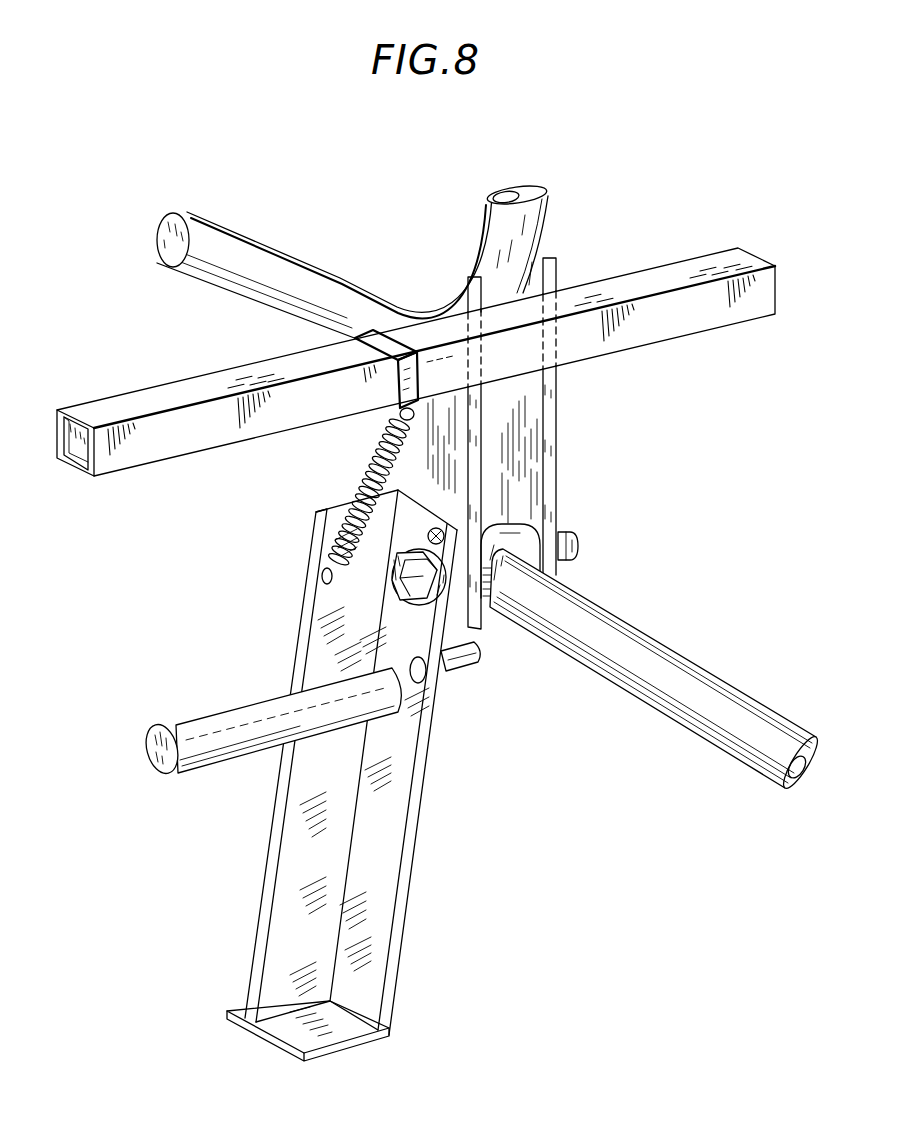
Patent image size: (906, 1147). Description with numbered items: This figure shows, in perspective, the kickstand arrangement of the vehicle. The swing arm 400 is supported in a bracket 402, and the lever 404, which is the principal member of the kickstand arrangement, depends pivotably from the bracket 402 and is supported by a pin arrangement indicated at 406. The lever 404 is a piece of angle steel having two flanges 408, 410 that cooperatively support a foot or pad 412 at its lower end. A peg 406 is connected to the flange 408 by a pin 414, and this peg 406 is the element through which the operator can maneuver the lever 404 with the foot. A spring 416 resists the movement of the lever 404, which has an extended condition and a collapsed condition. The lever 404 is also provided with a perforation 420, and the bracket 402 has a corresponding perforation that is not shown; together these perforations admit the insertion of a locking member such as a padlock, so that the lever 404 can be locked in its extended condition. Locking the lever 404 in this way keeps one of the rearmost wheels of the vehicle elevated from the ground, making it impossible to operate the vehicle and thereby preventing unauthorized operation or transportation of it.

The swing arm 400 is at (701, 675).
The bracket 402 is at (548, 482).
The lever 404 is at (353, 783).
The peg 406 is at (254, 711).
The flange 408 is at (378, 905).
The flange 410 is at (284, 899).
The foot or pad 412 is at (320, 1033).
The pin 414 is at (481, 668).
The spring 416 is at (362, 476).
The perforation 420 is at (420, 533).